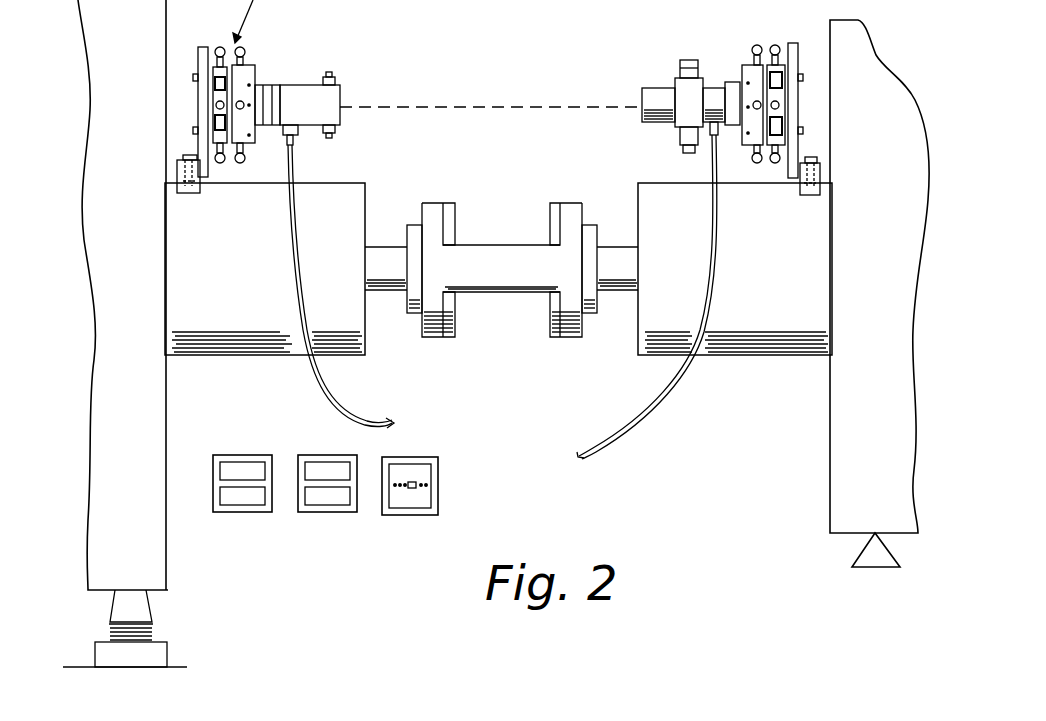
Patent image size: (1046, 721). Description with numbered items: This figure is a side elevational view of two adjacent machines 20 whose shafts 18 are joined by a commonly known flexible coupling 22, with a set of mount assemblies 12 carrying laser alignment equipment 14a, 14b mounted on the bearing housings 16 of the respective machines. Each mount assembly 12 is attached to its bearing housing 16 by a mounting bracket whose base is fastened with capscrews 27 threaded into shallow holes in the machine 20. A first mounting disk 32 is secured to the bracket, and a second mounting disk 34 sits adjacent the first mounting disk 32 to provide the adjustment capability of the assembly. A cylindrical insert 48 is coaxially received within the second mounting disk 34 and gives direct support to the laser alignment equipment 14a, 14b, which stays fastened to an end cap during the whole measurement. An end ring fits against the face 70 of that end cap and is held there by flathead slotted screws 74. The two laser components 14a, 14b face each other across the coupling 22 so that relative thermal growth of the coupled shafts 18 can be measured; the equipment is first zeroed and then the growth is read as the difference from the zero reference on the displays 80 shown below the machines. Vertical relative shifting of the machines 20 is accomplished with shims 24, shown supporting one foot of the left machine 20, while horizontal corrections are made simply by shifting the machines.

The mount assembly 12 is at (744, 42).
The laser alignment equipment 14a is at (658, 68).
The laser alignment equipment 14b is at (347, 77).
The bearing housing 16 is at (327, 210).
The shaft 18 is at (613, 285).
The machine 20 is at (140, 420).
The flexible coupling 22 is at (505, 257).
The shims 24 is at (165, 631).
The capscrews 27 is at (185, 158).
The first mounting disk 32 is at (217, 45).
The second mounting disk 34 is at (242, 80).
The cylindrical insert 48 is at (260, 95).
The face of the end cap 70 is at (790, 0).
The flathead slotted screws 74 is at (907, 0).
The displays 80 is at (332, 512).